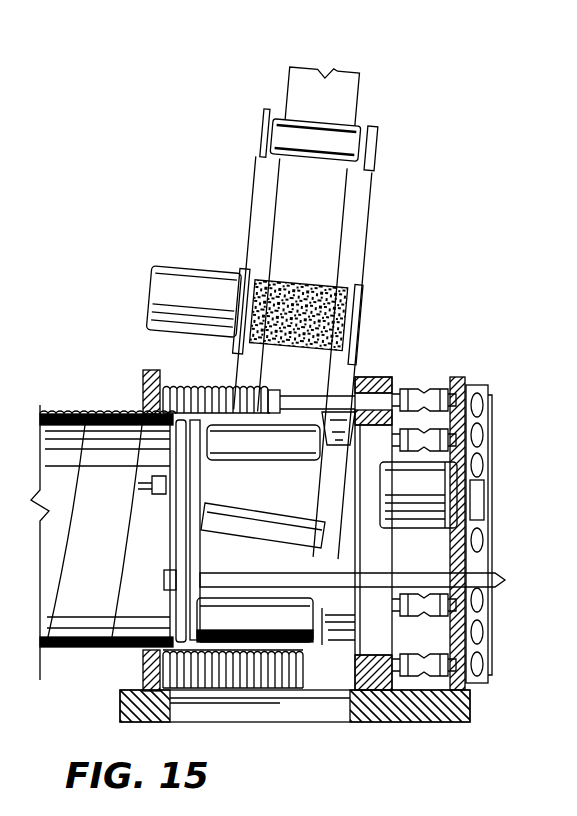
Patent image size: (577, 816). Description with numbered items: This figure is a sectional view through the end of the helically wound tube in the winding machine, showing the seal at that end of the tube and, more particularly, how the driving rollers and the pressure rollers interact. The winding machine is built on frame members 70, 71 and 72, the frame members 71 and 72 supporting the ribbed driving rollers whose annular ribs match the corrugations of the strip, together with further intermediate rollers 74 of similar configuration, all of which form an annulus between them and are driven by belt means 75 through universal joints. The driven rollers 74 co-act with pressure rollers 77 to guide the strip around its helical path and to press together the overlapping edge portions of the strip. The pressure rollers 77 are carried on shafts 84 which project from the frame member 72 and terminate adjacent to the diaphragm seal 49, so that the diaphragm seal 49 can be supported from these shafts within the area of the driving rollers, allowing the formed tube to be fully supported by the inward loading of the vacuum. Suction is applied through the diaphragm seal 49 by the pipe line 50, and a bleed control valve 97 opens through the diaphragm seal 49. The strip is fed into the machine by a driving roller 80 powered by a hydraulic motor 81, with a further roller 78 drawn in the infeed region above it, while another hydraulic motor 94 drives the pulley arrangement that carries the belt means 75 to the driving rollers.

The diaphragm seal 49 is at (176, 550).
The pipe line 50 is at (500, 576).
The frame member 70 is at (465, 382).
The frame member 71 is at (143, 383).
The frame member 72 is at (375, 382).
The intermediate rollers 74 is at (186, 392).
The belt means 75 is at (492, 632).
The pressure rollers 77 is at (277, 445).
The roller 78 is at (272, 140).
The driving roller 80 is at (348, 310).
The hydraulic motor 81 is at (190, 290).
The shafts 84 is at (325, 420).
The hydraulic motor 94 is at (425, 488).
The bleed control valve 97 is at (165, 487).